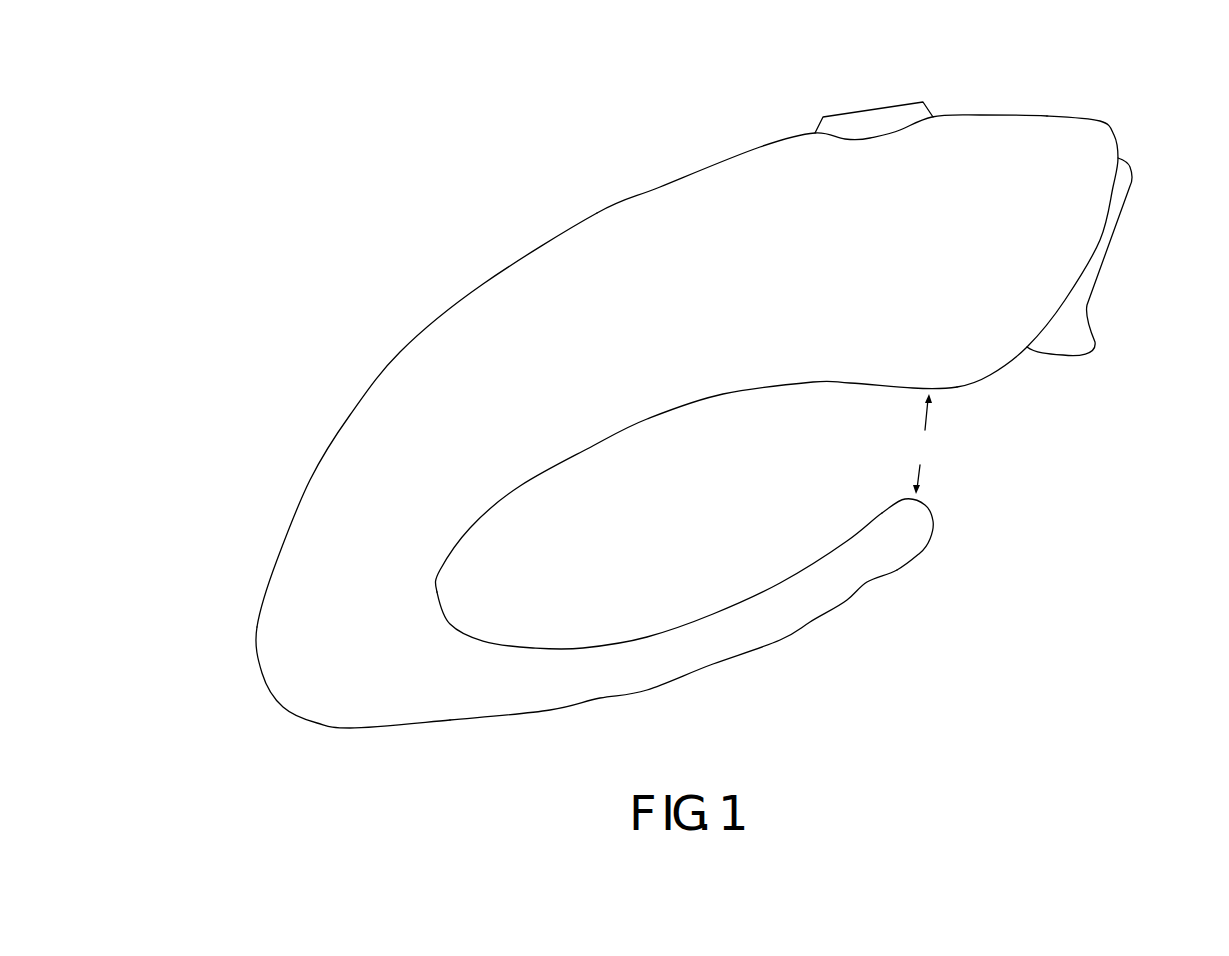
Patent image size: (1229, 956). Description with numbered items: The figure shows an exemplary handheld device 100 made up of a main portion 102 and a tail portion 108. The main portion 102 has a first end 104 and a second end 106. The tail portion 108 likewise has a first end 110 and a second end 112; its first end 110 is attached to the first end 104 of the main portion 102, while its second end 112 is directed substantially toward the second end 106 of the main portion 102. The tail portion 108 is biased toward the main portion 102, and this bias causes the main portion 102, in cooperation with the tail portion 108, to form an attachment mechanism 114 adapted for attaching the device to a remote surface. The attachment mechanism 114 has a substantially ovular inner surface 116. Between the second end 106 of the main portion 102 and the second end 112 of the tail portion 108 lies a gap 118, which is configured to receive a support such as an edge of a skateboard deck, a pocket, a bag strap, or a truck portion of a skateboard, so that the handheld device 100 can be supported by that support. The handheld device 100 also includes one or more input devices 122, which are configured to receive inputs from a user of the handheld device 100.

The handheld device 100 is at (404, 186).
The main portion 102 is at (585, 227).
The first end of the main portion 104 is at (273, 560).
The second end of the main portion 106 is at (1105, 123).
The tail portion 108 is at (743, 654).
The first end of the tail portion 110 is at (236, 658).
The second end of the tail portion 112 is at (935, 521).
The attachment mechanism 114 is at (770, 460).
The inner surface 116 is at (587, 647).
The gap 118 is at (923, 444).
The input devices 122 is at (863, 107).